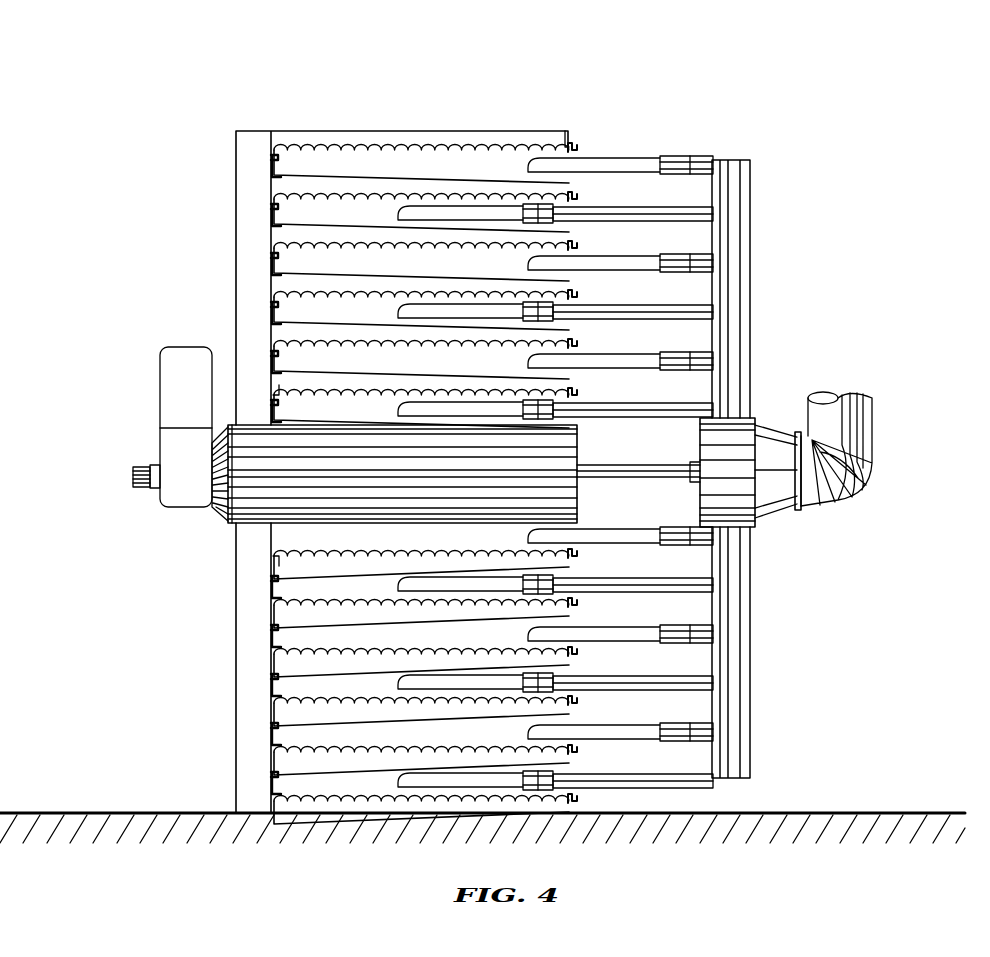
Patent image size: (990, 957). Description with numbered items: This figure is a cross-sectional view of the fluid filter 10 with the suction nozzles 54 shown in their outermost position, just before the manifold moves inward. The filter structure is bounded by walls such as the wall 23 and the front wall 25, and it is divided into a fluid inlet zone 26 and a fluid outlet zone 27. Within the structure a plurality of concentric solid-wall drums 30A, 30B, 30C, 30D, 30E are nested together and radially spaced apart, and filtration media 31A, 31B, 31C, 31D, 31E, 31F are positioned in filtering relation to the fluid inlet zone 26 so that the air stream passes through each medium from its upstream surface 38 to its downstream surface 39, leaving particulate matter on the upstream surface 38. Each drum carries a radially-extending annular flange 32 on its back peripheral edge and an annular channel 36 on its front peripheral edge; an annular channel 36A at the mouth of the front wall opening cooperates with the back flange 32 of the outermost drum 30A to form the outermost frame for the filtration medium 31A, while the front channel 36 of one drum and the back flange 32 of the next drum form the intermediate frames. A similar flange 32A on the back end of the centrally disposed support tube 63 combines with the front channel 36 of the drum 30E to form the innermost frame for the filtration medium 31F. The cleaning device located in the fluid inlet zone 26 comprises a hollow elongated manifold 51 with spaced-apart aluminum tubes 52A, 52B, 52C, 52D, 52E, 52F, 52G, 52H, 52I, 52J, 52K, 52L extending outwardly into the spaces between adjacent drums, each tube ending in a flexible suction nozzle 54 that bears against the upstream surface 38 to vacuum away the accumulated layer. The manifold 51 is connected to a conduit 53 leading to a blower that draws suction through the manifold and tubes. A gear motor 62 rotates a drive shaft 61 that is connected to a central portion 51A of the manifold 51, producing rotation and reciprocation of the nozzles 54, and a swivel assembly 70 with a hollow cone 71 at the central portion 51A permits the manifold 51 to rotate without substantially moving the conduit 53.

The fluid filter 10 is at (205, 152).
The wall 23 is at (450, 131).
The front wall 25 is at (568, 131).
The fluid inlet zone 26 is at (675, 128).
The fluid outlet zone 27 is at (160, 752).
The outermost drum 30A is at (345, 175).
The drum 30B is at (300, 226).
The drum 30C is at (300, 275).
The drum 30D is at (375, 624).
The innermost drum 30E is at (390, 575).
The filtration medium 31A is at (405, 146).
The filtration medium 31B is at (290, 196).
The filtration medium 31C is at (295, 247).
The filtration medium 31D is at (295, 296).
The filtration medium 31E is at (300, 603).
The filtration medium 31F is at (300, 555).
The annular flange 32 is at (274, 150).
The flange 32A is at (275, 402).
The annular channel 36 is at (578, 196).
The annular channel 36A is at (580, 145).
The upstream surface 38 is at (487, 150).
The downstream surface 39 is at (505, 146).
The manifold 51 is at (750, 160).
The central portion of the manifold 51A is at (868, 460).
The tube 52A is at (745, 160).
The tube 52B is at (752, 212).
The tube 52C is at (752, 262).
The tube 52D is at (752, 311).
The tube 52E is at (752, 360).
The tube 52F is at (752, 409).
The tube 52G is at (752, 534).
The tube 52H is at (752, 583).
The tube 52I is at (752, 632).
The tube 52J is at (752, 681).
The tube 52K is at (752, 730).
The tube 52L is at (752, 779).
The conduit 53 is at (868, 425).
The suction nozzle 54 is at (625, 160).
The drive shaft 61 is at (140, 478).
The gear motor 62 is at (191, 475).
The support tube 63 is at (400, 486).
The swivel assembly 70 is at (762, 428).
The hollow cone 71 is at (745, 470).